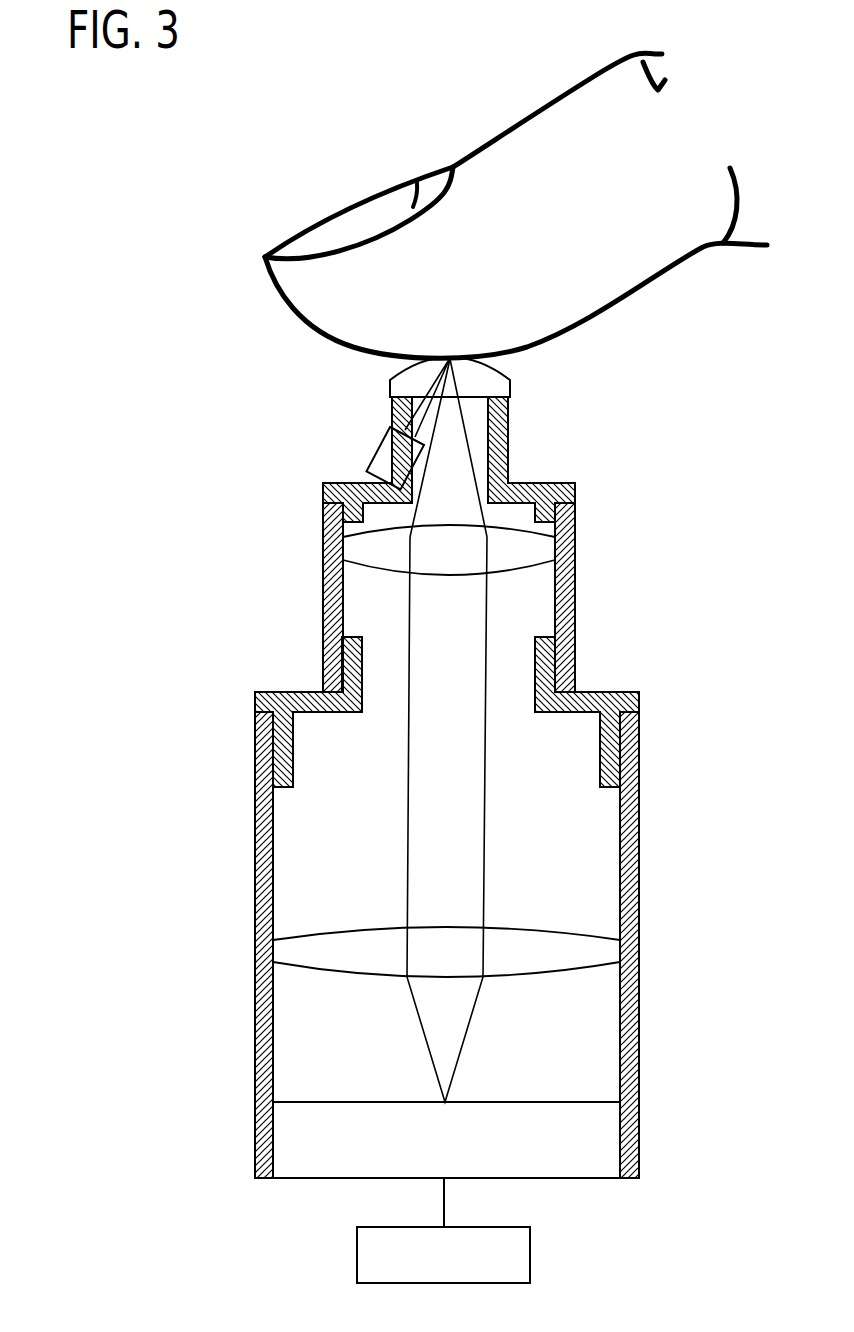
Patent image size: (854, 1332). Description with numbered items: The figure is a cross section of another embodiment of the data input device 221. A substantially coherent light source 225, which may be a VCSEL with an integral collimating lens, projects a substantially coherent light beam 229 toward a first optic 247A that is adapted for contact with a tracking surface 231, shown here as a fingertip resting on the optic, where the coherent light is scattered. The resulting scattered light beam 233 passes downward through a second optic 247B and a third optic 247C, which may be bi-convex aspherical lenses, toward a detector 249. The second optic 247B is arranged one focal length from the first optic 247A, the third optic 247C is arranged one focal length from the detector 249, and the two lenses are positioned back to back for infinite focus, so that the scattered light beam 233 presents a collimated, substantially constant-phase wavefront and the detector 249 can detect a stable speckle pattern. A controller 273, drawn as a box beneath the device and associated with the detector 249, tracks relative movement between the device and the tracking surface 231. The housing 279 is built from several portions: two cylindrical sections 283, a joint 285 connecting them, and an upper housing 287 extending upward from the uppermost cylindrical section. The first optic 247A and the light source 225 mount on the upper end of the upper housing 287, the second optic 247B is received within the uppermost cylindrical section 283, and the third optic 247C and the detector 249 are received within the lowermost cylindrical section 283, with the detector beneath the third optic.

The device 221 is at (132, 476).
The substantially coherent light source 225 is at (378, 450).
The substantially coherent light beam 229 is at (432, 383).
The tracking surface 231 is at (520, 350).
The scattered light beam 233 is at (405, 883).
The first optic 247A is at (510, 390).
The second optic 247B is at (535, 562).
The third optic 247C is at (603, 953).
The detector 249 is at (290, 1135).
The controller 273 is at (357, 1243).
The housing 279 is at (249, 725).
The cylindrical sections 283 is at (323, 577).
The joint 285 is at (622, 693).
The upper housing 287 is at (547, 483).